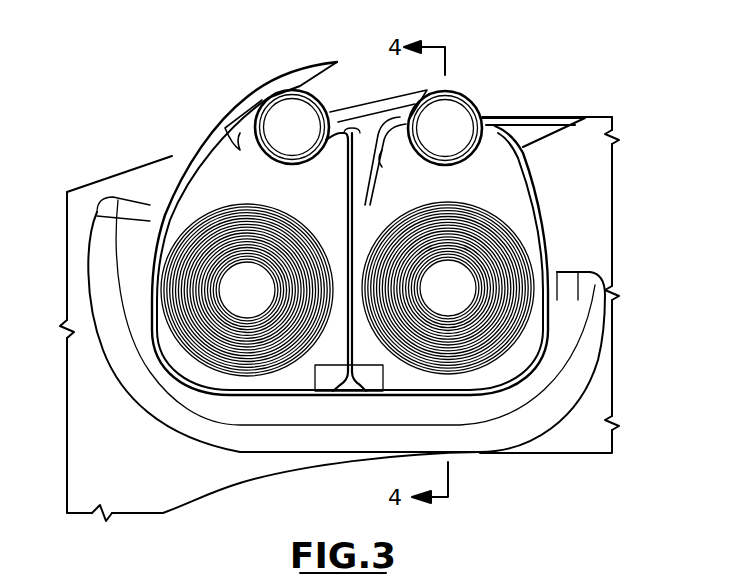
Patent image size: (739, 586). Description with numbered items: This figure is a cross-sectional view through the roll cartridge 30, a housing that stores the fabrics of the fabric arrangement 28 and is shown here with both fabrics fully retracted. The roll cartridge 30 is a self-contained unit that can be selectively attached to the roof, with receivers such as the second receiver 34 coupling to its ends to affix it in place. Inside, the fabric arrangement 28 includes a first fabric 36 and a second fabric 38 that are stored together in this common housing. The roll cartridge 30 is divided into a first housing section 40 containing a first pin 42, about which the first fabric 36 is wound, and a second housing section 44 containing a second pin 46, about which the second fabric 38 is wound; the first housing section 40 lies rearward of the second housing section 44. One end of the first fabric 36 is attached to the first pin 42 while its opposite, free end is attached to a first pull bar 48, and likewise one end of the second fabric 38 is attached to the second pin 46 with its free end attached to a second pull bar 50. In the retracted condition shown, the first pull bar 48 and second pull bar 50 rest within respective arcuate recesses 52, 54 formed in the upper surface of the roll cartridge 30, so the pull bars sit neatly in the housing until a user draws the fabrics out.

The fabric arrangement 28 is at (504, 102).
The roll cartridge 30 is at (196, 95).
The second receiver 34 is at (562, 424).
The first fabric 36 is at (167, 252).
The second fabric 38 is at (512, 237).
The first housing section 40 is at (213, 197).
The first pin 42 is at (255, 275).
The second housing section 44 is at (500, 187).
The second pin 46 is at (465, 290).
The first pull bar 48 is at (292, 122).
The second pull bar 50 is at (445, 125).
The arcuate recess 52 is at (290, 168).
The arcuate recess 54 is at (442, 168).